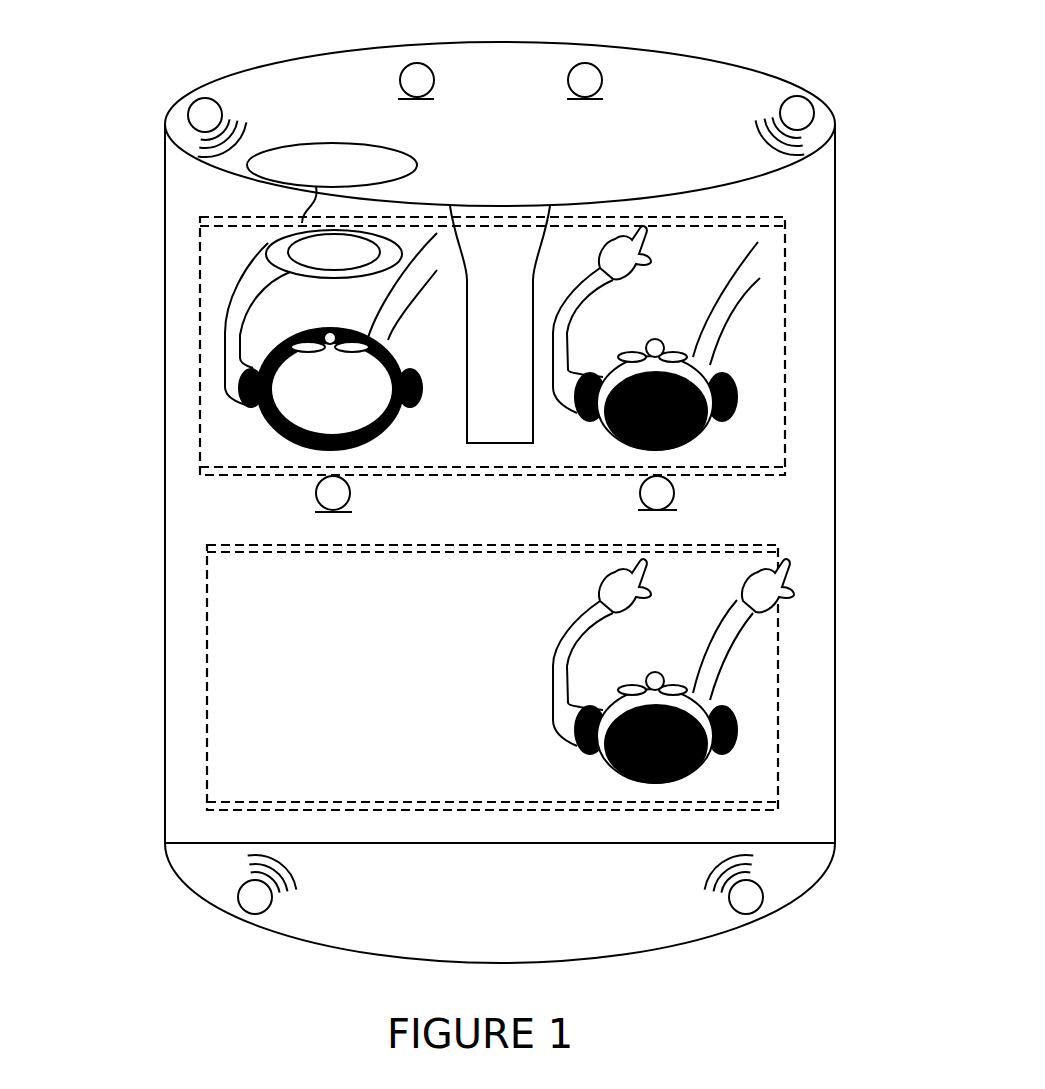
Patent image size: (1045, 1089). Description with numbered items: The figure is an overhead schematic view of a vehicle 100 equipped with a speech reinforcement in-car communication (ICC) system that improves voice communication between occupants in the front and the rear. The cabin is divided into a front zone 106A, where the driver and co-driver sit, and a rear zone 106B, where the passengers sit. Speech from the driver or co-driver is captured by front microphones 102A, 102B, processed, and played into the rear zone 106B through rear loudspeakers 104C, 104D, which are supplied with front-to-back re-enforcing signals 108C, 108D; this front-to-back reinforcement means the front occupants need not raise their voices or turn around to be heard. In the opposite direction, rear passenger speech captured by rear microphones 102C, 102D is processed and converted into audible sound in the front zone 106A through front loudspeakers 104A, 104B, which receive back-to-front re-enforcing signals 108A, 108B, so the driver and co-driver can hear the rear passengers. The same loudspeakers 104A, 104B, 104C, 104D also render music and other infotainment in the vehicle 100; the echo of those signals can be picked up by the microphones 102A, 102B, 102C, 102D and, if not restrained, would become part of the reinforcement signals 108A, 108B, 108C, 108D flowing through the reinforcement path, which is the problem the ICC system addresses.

The vehicle 100 is at (298, 25).
The microphone 102A is at (430, 100).
The microphone 102B is at (577, 100).
The microphone 102C is at (316, 504).
The microphone 102D is at (641, 504).
The loudspeaker 104A is at (198, 98).
The loudspeaker 104B is at (800, 96).
The loudspeaker 104C is at (250, 914).
The loudspeaker 104D is at (756, 913).
The front zone 106A is at (198, 317).
The rear zone 106B is at (208, 610).
The back-to-front re-enforcing signal 108A is at (180, 122).
The back-to-front re-enforcing signal 108B is at (762, 136).
The front-to-back re-enforcing signal 108C is at (284, 880).
The front-to-back re-enforcing signal 108D is at (722, 887).